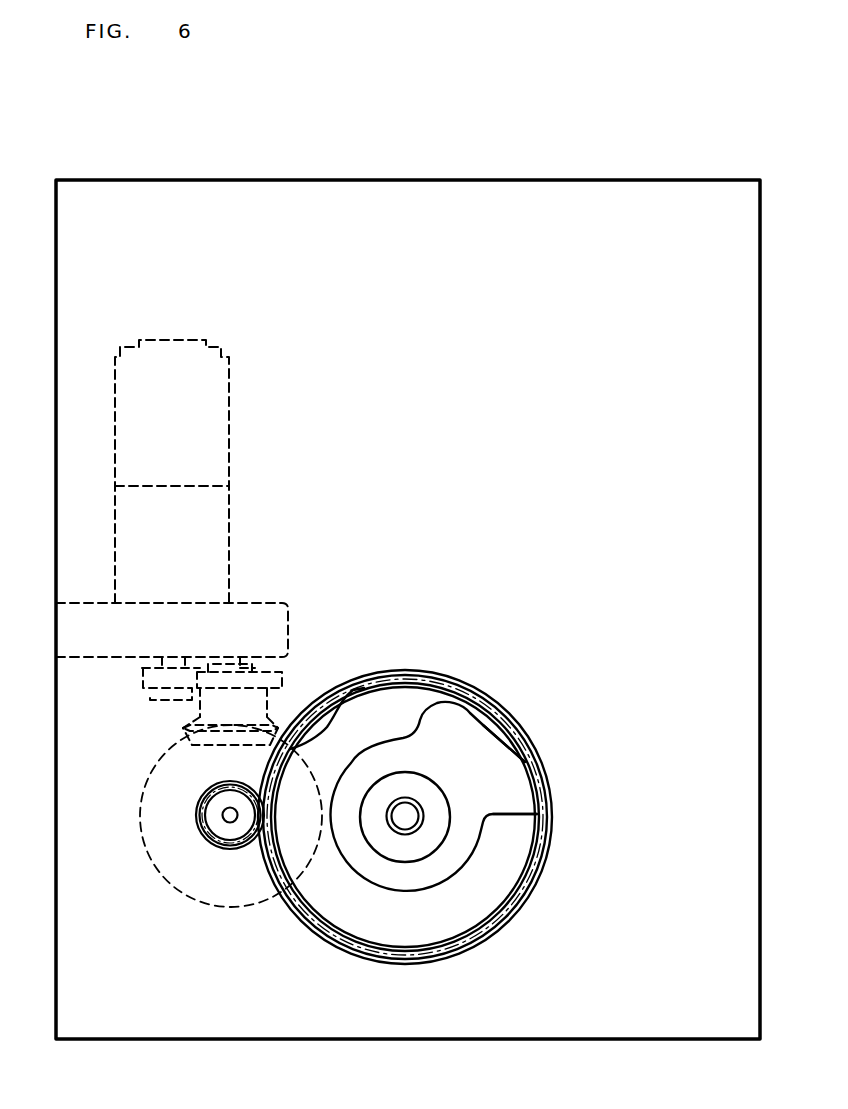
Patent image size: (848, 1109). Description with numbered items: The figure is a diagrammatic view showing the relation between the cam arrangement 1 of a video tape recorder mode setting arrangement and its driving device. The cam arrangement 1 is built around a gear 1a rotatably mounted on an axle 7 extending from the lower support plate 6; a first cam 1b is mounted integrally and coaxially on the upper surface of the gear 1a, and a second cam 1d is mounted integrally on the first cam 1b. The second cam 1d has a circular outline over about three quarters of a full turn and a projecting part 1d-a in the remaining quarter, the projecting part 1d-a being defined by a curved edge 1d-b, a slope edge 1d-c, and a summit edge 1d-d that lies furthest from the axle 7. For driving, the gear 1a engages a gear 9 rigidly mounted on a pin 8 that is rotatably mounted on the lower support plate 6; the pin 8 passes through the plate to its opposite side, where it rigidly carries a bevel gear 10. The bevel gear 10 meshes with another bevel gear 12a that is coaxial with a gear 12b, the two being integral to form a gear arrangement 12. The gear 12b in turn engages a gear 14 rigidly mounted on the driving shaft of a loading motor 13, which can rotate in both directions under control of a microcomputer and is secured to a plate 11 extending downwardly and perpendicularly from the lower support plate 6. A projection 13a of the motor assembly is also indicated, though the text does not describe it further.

The cam arrangement 1 is at (384, 965).
The gear 1a is at (552, 827).
The first cam 1b is at (520, 882).
The second cam 1d is at (452, 875).
The projecting part 1d-a is at (520, 750).
The curved edge 1d-b is at (427, 705).
The slope edge 1d-c is at (492, 755).
The summit edge 1d-d is at (548, 785).
The lower support plate 6 is at (565, 1030).
The axle 7 is at (403, 820).
The pin 8 is at (228, 815).
The gear 9 is at (222, 853).
The bevel gear 10 is at (228, 900).
The plate 11 is at (284, 607).
The gear arrangement 12 is at (270, 702).
The bevel gear 12a is at (210, 735).
The gear 12b is at (197, 708).
The loading motor 13 is at (228, 517).
The projection of slide member 13a is at (145, 668).
The gear 14 is at (142, 694).